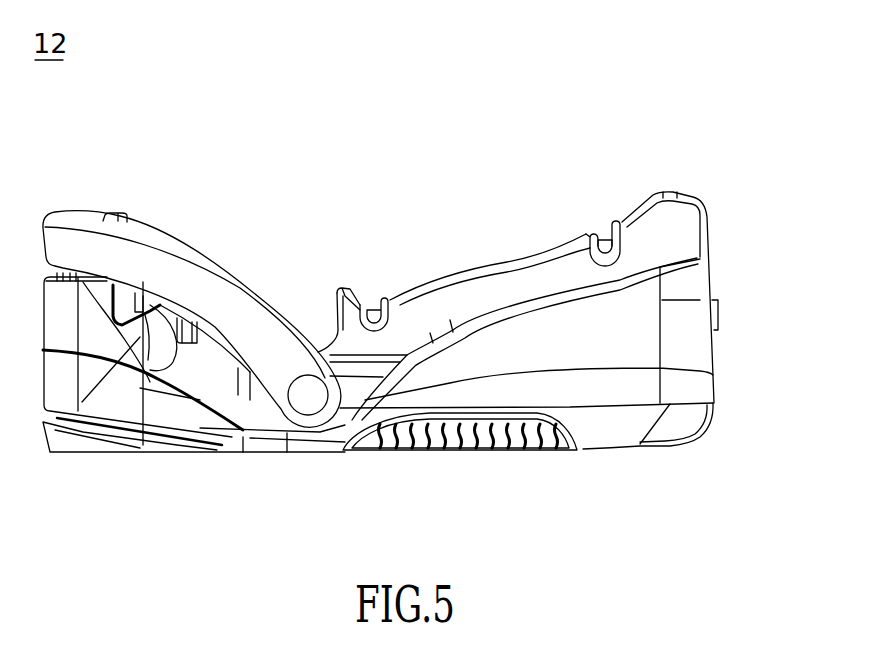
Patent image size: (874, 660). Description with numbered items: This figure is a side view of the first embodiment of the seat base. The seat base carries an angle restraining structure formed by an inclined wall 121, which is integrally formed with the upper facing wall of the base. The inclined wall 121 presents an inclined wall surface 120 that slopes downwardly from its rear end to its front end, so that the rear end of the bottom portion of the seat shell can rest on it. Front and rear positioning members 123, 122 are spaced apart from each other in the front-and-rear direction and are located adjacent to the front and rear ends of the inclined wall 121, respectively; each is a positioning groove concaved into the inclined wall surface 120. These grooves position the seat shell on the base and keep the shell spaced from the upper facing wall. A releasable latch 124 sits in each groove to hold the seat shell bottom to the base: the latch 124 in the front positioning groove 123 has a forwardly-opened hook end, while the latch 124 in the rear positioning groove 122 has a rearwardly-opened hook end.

The inclined wall surface 120 is at (477, 270).
The inclined wall 121 is at (650, 242).
The rear positioning member 122 is at (608, 216).
The front positioning member 123 is at (363, 294).
The releasable latch 124 is at (374, 298).